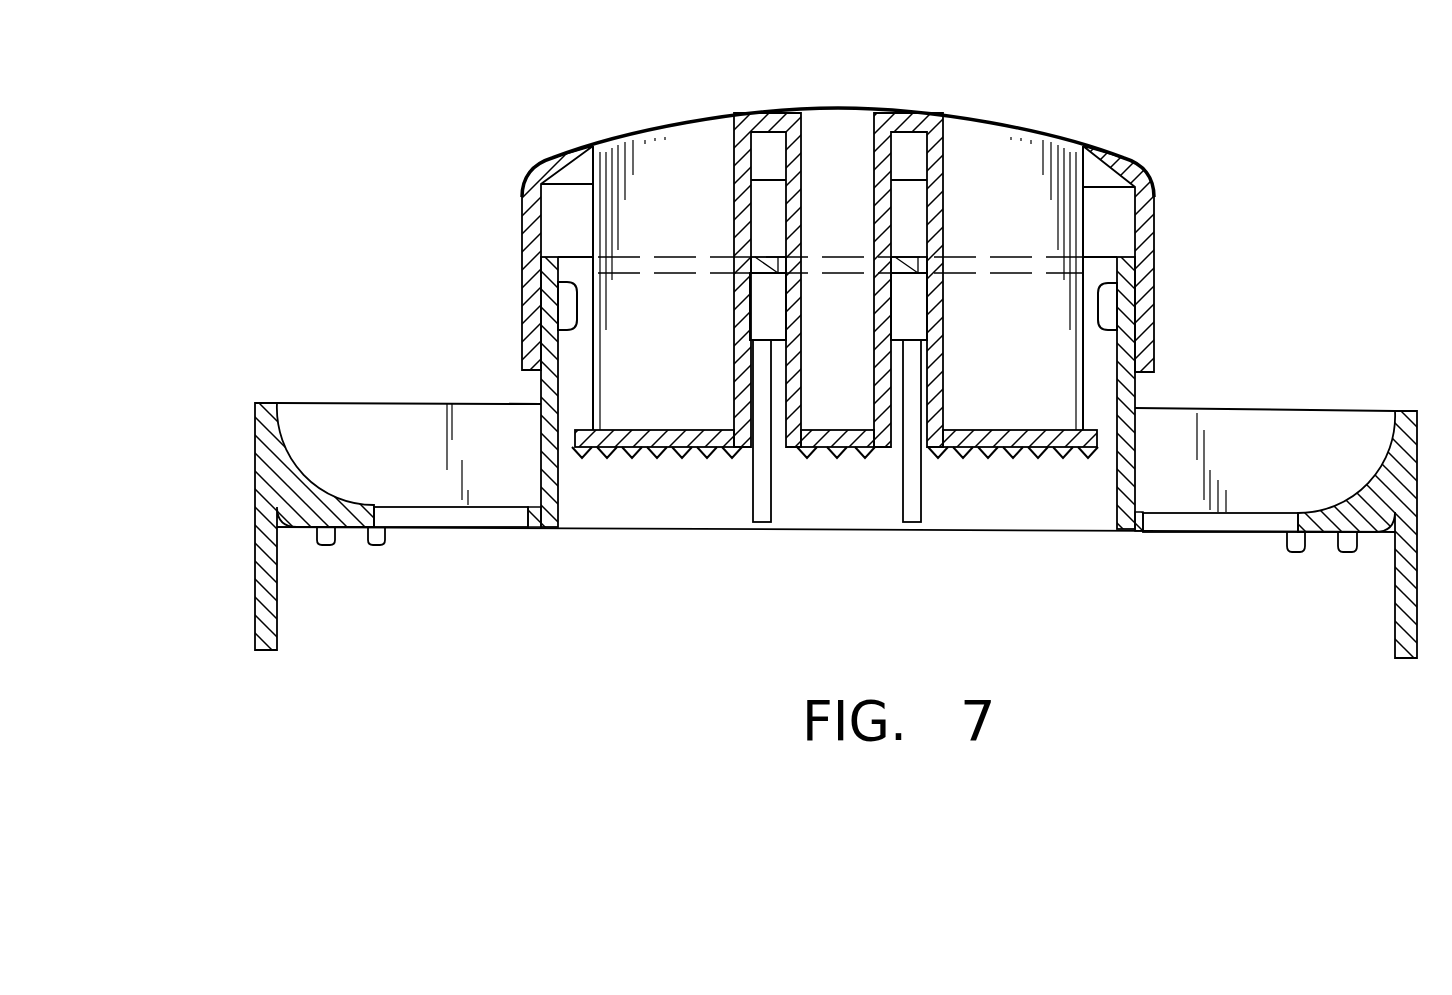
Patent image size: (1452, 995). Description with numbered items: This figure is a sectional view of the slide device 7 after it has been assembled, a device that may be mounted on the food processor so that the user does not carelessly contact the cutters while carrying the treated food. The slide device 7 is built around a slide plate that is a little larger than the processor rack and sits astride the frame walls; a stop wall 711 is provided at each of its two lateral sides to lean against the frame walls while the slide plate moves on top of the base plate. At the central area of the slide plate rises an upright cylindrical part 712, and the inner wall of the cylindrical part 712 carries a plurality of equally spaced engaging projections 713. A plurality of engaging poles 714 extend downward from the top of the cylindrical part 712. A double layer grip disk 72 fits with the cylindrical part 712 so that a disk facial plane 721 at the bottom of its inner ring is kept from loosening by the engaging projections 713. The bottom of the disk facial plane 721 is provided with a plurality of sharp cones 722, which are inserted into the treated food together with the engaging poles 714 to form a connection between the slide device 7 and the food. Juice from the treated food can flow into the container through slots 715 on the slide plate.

The slide device 7 is at (615, 130).
The double layer grip disk 72 is at (1112, 166).
The stop wall 711 is at (262, 595).
The cylindrical part 712 is at (1127, 396).
The engaging projection 713 is at (563, 303).
The engaging pole 714 is at (915, 498).
The slot 715 is at (1247, 522).
The disk facial plane 721 is at (622, 452).
The sharp cone 722 is at (1100, 470).